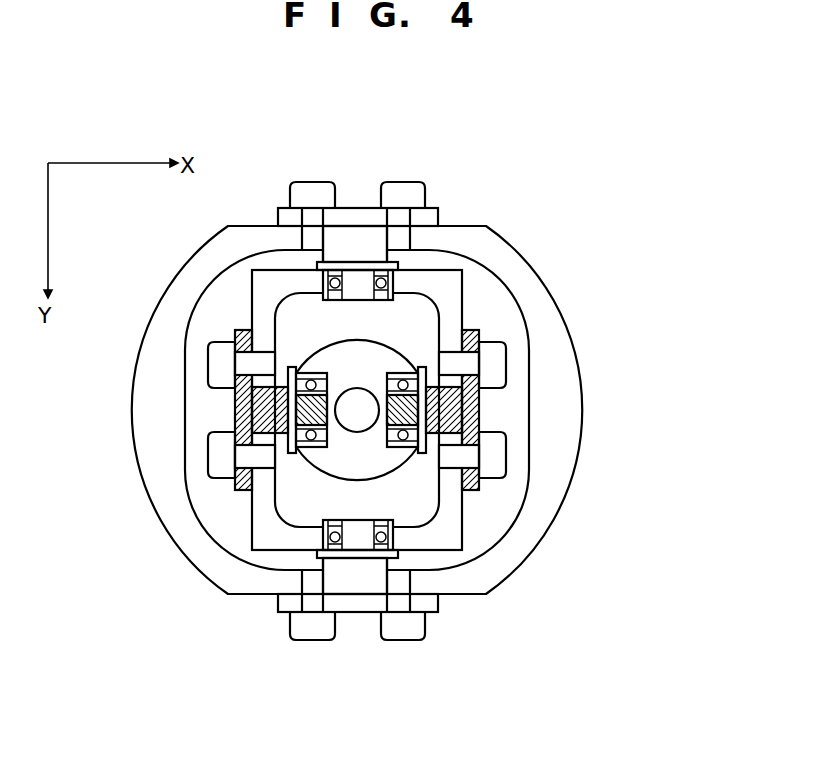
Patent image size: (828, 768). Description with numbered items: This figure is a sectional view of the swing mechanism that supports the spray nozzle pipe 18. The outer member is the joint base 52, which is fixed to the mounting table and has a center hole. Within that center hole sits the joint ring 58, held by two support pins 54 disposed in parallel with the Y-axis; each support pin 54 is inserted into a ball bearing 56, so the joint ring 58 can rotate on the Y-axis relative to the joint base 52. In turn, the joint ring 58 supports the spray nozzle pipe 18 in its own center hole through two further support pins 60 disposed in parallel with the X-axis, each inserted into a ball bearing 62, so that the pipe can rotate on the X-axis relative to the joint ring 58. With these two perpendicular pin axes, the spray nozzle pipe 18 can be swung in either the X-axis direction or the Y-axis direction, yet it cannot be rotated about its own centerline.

The spray nozzle pipe 18 is at (363, 463).
The joint base 52 is at (460, 233).
The support pin 54 is at (365, 243).
The ball bearing 56 is at (495, 252).
The joint ring 58 is at (452, 285).
The support pin 60 is at (480, 418).
The ball bearing 62 is at (403, 373).